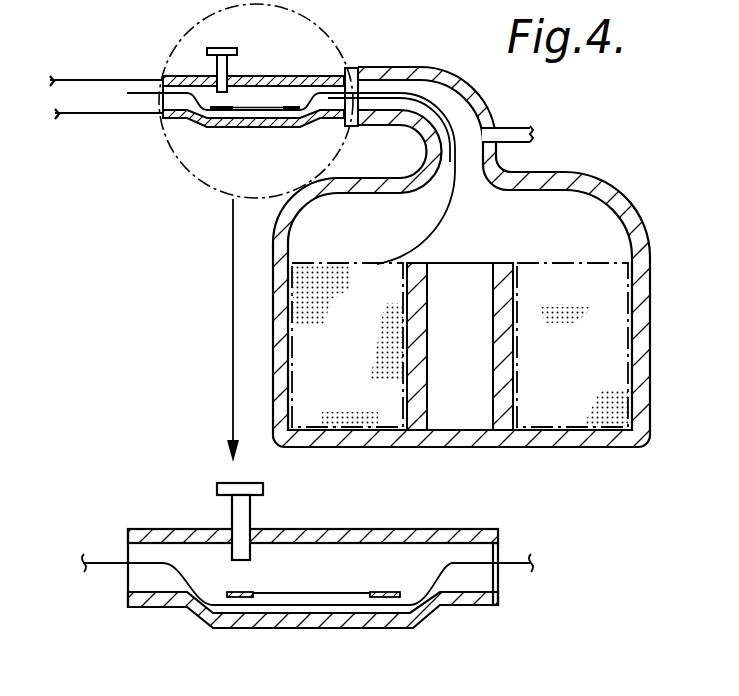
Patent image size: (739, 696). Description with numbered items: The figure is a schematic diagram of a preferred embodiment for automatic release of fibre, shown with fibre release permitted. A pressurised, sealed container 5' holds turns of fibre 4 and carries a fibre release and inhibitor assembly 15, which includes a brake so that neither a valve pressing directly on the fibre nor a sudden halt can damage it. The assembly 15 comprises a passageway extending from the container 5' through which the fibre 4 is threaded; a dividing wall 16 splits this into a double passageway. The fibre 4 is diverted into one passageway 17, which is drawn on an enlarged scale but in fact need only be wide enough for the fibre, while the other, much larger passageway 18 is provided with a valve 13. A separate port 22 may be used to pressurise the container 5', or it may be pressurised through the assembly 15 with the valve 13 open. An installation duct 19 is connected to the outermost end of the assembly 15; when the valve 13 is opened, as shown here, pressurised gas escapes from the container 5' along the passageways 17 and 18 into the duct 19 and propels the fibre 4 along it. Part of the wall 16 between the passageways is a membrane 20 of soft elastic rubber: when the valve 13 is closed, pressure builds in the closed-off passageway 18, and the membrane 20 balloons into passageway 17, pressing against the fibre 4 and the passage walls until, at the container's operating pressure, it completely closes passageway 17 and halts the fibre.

The fibre 4 is at (428, 232).
The container 5' is at (485, 257).
The valve 13 is at (238, 50).
The fibre release and inhibitor assembly 15 is at (308, 58).
The dividing wall 16 is at (250, 598).
The passageway 17 is at (355, 600).
The passageway 18 is at (397, 573).
The installation duct 19 is at (93, 117).
The membrane 20 is at (321, 596).
The port 22 is at (531, 132).